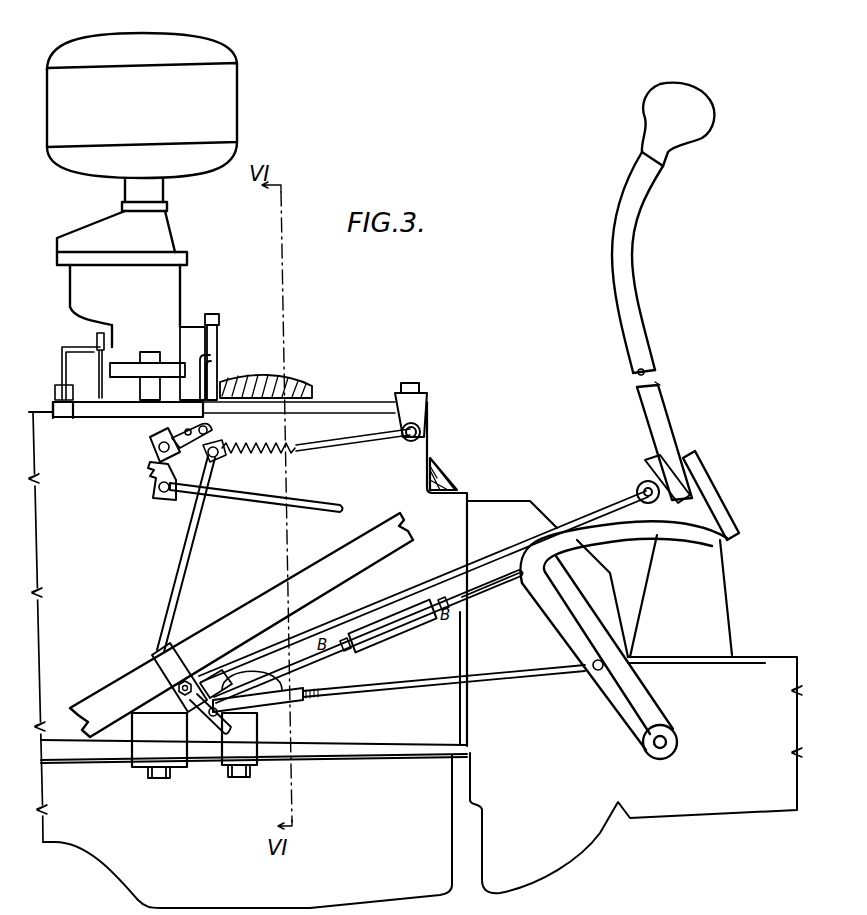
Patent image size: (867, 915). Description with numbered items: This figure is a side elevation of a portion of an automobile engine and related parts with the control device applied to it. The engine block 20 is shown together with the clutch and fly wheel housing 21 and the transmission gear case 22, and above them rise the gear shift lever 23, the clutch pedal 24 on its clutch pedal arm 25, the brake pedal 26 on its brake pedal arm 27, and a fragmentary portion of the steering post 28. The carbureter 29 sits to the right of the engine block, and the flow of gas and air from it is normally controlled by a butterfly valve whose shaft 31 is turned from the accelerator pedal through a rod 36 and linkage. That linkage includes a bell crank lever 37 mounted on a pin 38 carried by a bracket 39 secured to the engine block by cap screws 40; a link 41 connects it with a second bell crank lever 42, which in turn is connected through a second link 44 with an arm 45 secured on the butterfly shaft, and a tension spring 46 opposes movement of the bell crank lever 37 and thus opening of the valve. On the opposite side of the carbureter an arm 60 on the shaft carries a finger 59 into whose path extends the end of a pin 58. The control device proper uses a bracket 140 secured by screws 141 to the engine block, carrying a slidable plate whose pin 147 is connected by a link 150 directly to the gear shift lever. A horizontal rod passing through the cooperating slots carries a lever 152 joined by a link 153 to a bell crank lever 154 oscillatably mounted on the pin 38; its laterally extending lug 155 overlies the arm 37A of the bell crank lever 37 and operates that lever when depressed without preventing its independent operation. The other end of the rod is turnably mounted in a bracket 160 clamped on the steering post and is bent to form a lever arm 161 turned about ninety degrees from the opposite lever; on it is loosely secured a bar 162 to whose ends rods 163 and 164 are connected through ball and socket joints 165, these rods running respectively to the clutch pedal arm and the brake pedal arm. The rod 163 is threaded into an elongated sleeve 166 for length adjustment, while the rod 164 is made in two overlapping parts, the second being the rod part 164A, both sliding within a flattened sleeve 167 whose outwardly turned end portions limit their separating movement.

The engine block 20 is at (412, 460).
The clutch and fly wheel housing 21 is at (505, 512).
The transmission gear case 22 is at (705, 800).
The gear shift lever 23 is at (660, 415).
The clutch pedal 24 is at (737, 515).
The clutch pedal arm 25 is at (628, 688).
The brake pedal 26 is at (645, 466).
The brake pedal arm 27 is at (542, 630).
The steering post 28 is at (372, 549).
The carbureter 29 is at (167, 289).
The butterfly valve shaft 31 is at (207, 339).
The rod 36 is at (309, 484).
The bell crank lever 37 is at (154, 480).
The arm of bell crank lever 37A is at (210, 440).
The pin 38 is at (155, 450).
The bracket 39 is at (112, 417).
The cap screws 40 is at (60, 420).
The link 41 is at (206, 430).
The second bell crank lever 42 is at (212, 369).
The second link 44 is at (217, 320).
The arm 45 is at (208, 316).
The tension spring 46 is at (290, 452).
The pin 58 is at (83, 396).
The finger 59 is at (88, 371).
The arm 60 is at (100, 349).
The bracket 140 is at (142, 756).
The screws 141 is at (238, 772).
The pin 147 is at (208, 680).
The link 150 is at (312, 629).
The lever 152 is at (150, 660).
The link 153 is at (185, 546).
The bell crank lever 154 is at (220, 452).
The lug 155 is at (186, 430).
The bracket 160 is at (178, 687).
The lever arm 161 is at (200, 718).
The bar 162 is at (230, 724).
The rod 163 is at (360, 694).
The rod 164 is at (320, 666).
The rod part 164A is at (463, 600).
The ball and socket joints 165 is at (212, 724).
The elongated sleeve 166 is at (270, 711).
The flattened sleeve 167 is at (394, 625).